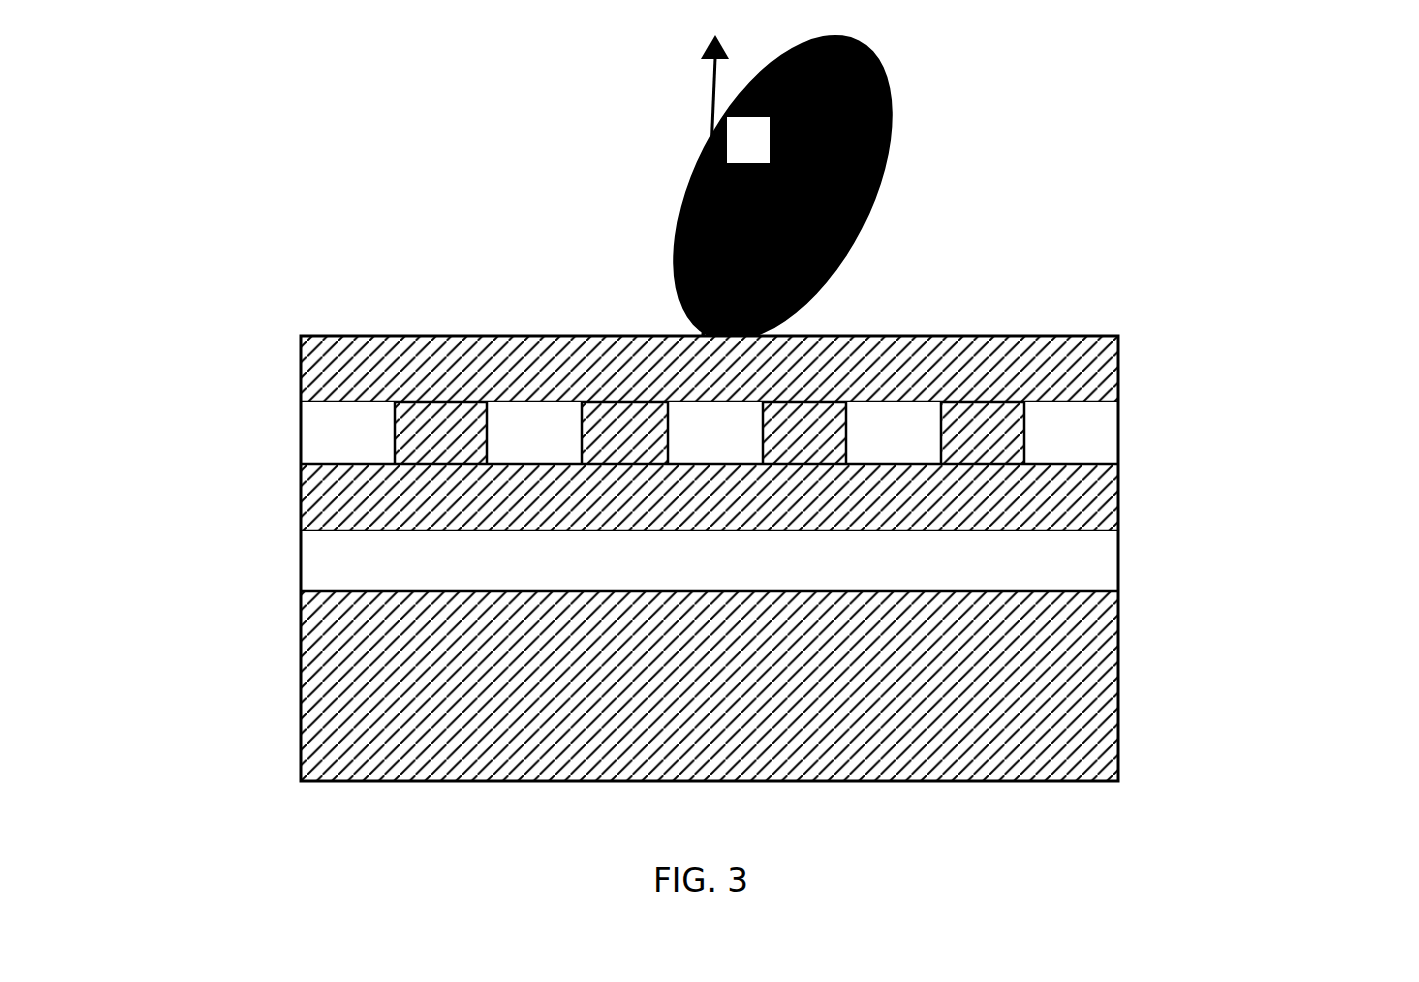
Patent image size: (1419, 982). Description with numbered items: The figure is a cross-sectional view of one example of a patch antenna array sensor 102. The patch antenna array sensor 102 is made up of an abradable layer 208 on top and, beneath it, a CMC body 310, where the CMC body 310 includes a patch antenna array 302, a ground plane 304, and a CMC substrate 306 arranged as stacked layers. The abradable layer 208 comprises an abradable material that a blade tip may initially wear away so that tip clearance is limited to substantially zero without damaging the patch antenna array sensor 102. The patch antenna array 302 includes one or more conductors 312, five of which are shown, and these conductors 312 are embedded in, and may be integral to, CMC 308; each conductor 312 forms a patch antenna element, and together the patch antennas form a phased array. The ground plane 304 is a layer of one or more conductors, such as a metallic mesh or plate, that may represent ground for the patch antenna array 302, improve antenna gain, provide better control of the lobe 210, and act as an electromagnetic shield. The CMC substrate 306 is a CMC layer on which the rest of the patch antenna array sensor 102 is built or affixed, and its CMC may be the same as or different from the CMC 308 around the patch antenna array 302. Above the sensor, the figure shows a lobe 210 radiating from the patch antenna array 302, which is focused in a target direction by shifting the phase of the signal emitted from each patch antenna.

The patch antenna array sensor 102 is at (718, 491).
The abradable layer 208 is at (1118, 373).
The lobe 210 is at (868, 196).
The patch antenna array 302 is at (694, 365).
The ground plane 304 is at (1118, 571).
The CMC substrate 306 is at (1118, 650).
The CMC 308 is at (575, 410).
The CMC body 310 is at (710, 491).
The conductors 312 is at (1072, 433).